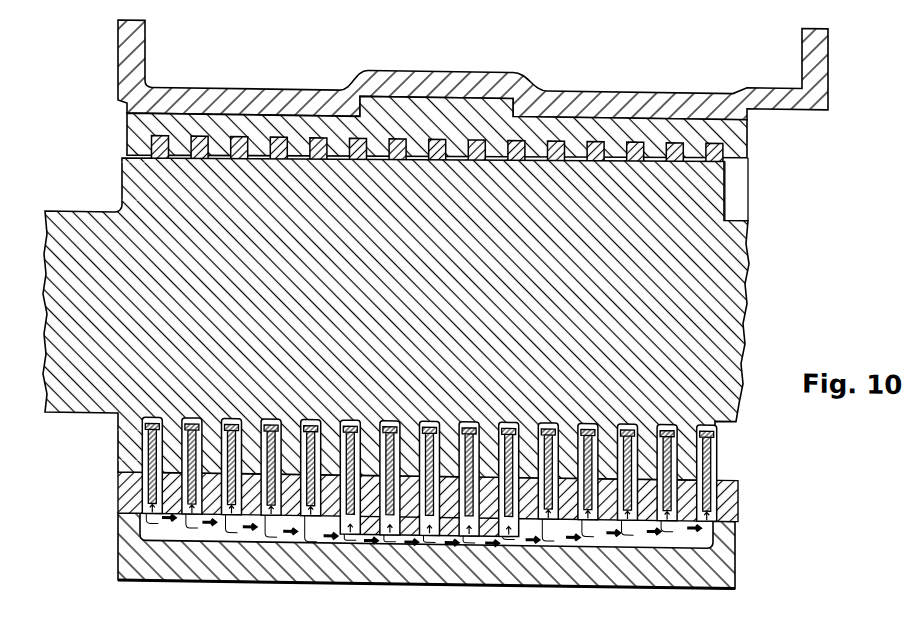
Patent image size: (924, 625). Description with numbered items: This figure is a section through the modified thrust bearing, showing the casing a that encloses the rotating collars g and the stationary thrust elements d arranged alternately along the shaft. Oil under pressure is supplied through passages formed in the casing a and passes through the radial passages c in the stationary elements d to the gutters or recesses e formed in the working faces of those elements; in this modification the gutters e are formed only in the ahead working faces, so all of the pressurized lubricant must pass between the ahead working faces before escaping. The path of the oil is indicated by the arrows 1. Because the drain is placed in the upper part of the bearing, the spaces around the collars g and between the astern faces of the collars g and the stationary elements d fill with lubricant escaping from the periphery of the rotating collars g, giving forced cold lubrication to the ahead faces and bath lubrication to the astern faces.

The casing a is at (587, 90).
The stationary thrust elements d is at (148, 146).
The collars g is at (126, 174).
The rotor h is at (75, 222).
The gutters or recesses e is at (148, 433).
The radial passages c is at (150, 473).
The arrows 1 is at (202, 524).